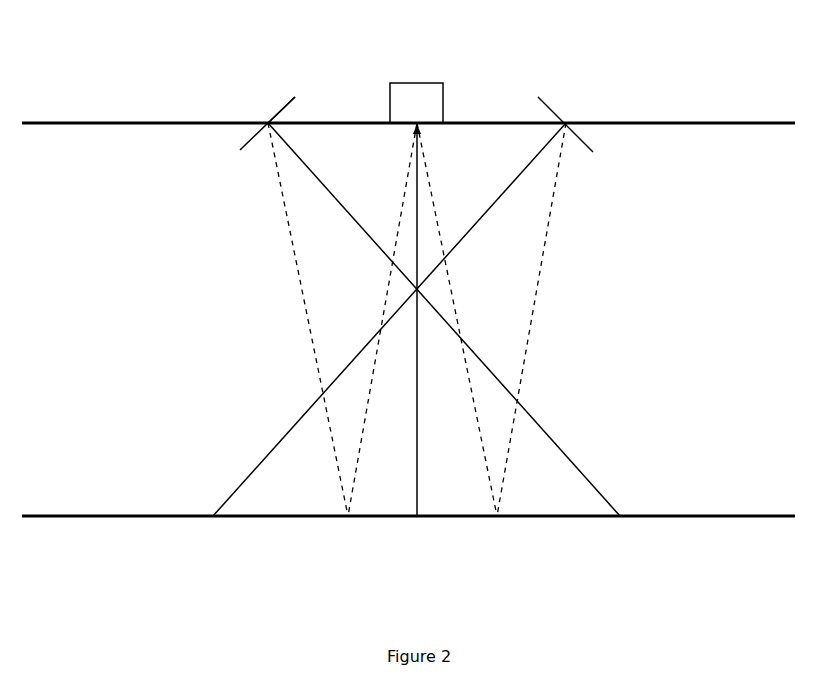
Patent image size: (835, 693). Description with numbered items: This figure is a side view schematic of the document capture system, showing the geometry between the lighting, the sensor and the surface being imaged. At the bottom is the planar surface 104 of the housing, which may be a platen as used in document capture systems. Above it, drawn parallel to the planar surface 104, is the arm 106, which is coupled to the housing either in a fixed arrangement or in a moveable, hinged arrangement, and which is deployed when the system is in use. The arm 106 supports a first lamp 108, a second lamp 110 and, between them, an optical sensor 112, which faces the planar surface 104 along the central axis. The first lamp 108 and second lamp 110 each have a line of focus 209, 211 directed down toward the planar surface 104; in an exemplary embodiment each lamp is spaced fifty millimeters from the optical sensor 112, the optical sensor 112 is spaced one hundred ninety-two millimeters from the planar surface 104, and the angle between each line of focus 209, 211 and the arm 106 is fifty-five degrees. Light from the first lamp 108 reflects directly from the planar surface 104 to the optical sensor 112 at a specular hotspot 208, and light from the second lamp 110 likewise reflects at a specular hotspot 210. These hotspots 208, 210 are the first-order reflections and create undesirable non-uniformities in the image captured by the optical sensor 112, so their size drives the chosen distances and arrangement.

The planar surface 104 is at (743, 514).
The arm 106 is at (744, 121).
The first lamp 108 is at (266, 121).
The second lamp 110 is at (568, 121).
The optical sensor 112 is at (418, 81).
The specular hotspot 208 is at (348, 519).
The line of focus 209 is at (346, 218).
The specular hotspot 210 is at (497, 519).
The line of focus 211 is at (487, 218).